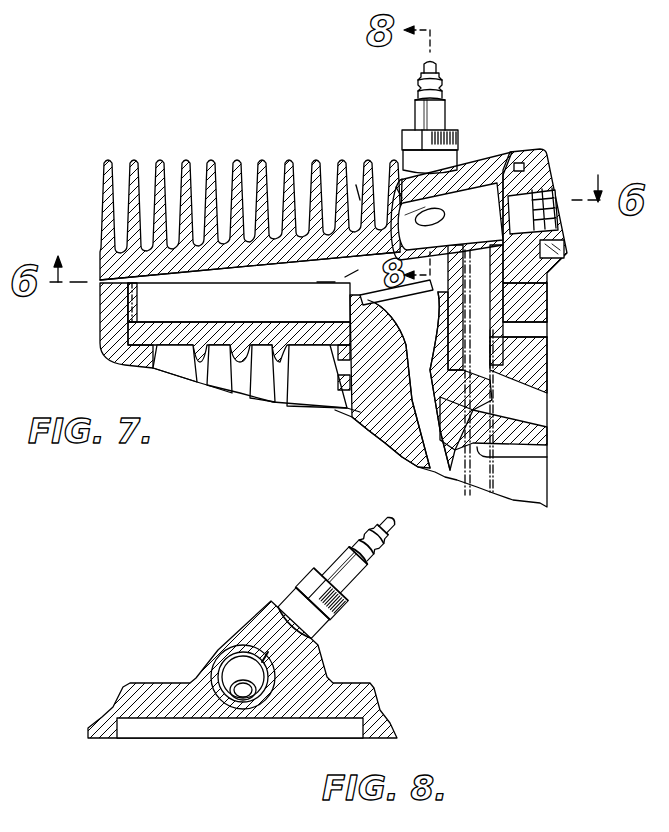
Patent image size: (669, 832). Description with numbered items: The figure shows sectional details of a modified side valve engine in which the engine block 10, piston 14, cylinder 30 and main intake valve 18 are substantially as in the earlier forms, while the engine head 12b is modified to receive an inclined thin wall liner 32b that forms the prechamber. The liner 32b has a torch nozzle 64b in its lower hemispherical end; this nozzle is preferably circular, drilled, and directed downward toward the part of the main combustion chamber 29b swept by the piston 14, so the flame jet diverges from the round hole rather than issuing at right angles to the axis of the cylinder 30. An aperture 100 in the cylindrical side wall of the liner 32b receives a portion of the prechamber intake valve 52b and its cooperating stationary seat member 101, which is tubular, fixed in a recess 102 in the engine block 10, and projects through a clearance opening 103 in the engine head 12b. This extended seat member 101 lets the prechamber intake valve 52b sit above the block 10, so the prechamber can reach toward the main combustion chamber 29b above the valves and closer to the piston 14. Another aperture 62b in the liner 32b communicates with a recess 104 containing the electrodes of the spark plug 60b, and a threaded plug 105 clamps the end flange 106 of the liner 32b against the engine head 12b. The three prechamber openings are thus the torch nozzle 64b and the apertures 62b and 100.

In FIG. 7, the engine block 10 is at (119, 311).
In FIG. 7, the engine head 12b is at (100, 253).
In FIG. 8, the engine head 12b is at (133, 693).
In FIG. 7, the piston 14 is at (263, 333).
In FIG. 7, the main intake valve 18 is at (442, 448).
In FIG. 7, the main combustion chamber 29b is at (250, 287).
In FIG. 7, the cylinder 30 is at (348, 400).
In FIG. 7, the thin wall liner 32b is at (483, 185).
In FIG. 8, the thin wall liner 32b is at (223, 650).
In FIG. 7, the prechamber intake valve 52b is at (475, 250).
In FIG. 7, the spark plug 60b is at (446, 108).
In FIG. 8, the spark plug 60b is at (338, 570).
In FIG. 7, the aperture 62b is at (396, 187).
In FIG. 8, the aperture 62b is at (270, 667).
In FIG. 7, the torch nozzle 64b is at (356, 185).
In FIG. 8, the torch nozzle 64b is at (240, 693).
In FIG. 7, the aperture 100 is at (548, 217).
In FIG. 7, the stationary seat member 101 is at (555, 270).
In FIG. 7, the recess 102 is at (547, 298).
In FIG. 7, the clearance opening 103 is at (562, 252).
In FIG. 8, the recess 104 is at (273, 657).
In FIG. 7, the threaded plug 105 is at (538, 187).
In FIG. 7, the end flange 106 is at (522, 166).